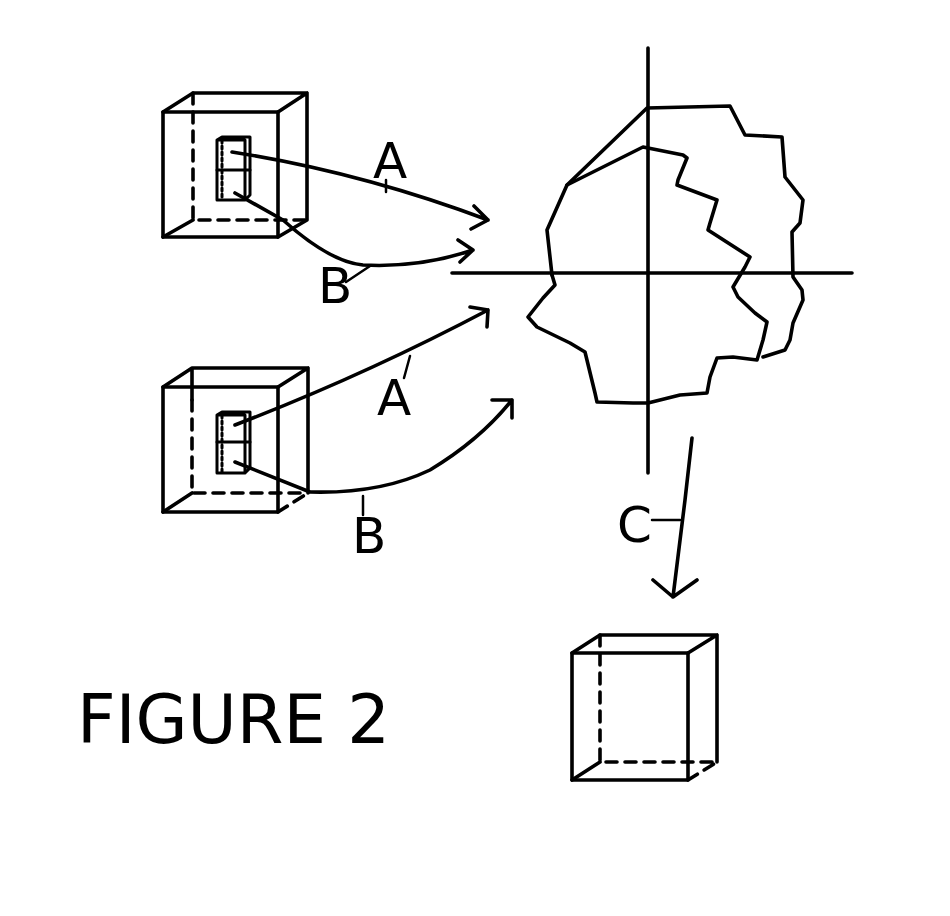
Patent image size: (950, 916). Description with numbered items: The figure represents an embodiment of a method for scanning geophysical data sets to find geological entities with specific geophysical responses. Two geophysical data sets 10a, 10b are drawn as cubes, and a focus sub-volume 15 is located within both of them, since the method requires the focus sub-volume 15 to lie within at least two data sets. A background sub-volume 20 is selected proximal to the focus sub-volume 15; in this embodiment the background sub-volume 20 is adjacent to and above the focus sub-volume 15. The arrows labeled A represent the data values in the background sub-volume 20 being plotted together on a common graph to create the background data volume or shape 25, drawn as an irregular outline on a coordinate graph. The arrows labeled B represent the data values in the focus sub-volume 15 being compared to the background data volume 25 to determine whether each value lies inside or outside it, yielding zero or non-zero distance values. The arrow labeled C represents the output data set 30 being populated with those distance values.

The geophysical data set 10a is at (192, 512).
The geophysical data set 10b is at (195, 93).
The focus sub-volume 15 is at (217, 460).
The background sub-volume 20 is at (227, 440).
The background data volume 25 is at (755, 360).
The output data set 30 is at (572, 725).